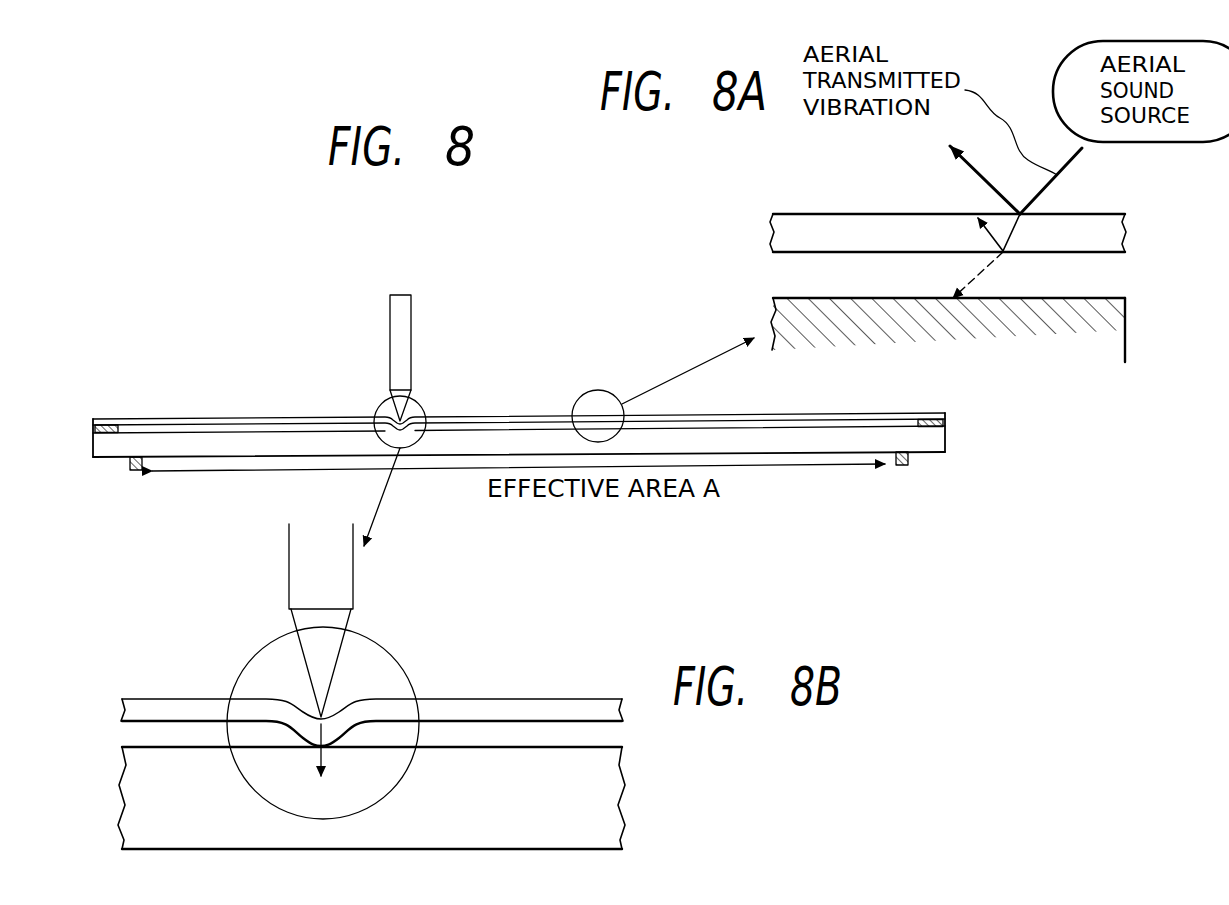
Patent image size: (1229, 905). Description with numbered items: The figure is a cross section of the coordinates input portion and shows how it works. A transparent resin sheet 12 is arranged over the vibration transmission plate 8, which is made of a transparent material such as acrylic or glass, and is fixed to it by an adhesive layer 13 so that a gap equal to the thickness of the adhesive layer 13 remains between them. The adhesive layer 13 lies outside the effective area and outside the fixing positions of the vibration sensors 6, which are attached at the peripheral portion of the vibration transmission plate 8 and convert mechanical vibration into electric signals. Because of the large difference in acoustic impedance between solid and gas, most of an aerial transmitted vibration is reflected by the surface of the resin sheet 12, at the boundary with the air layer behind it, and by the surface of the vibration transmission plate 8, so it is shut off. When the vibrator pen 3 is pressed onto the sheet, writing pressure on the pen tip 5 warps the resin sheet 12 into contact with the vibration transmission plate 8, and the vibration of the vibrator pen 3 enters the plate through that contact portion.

In FIG. 8, the vibrator pen 3 is at (404, 314).
In FIG. 8B, the vibrator pen 3 is at (349, 582).
In FIG. 8B, the pen tip 5 is at (335, 671).
In FIG. 8, the vibration sensor 6 is at (133, 472).
In FIG. 8, the vibration transmission plate 8 is at (947, 450).
In FIG. 8A, the vibration transmission plate 8 is at (1020, 305).
In FIG. 8B, the vibration transmission plate 8 is at (527, 838).
In FIG. 8, the resin sheet 12 is at (470, 418).
In FIG. 8A, the resin sheet 12 is at (812, 214).
In FIG. 8B, the resin sheet 12 is at (565, 699).
In FIG. 8, the adhesive layer 13 is at (93, 427).